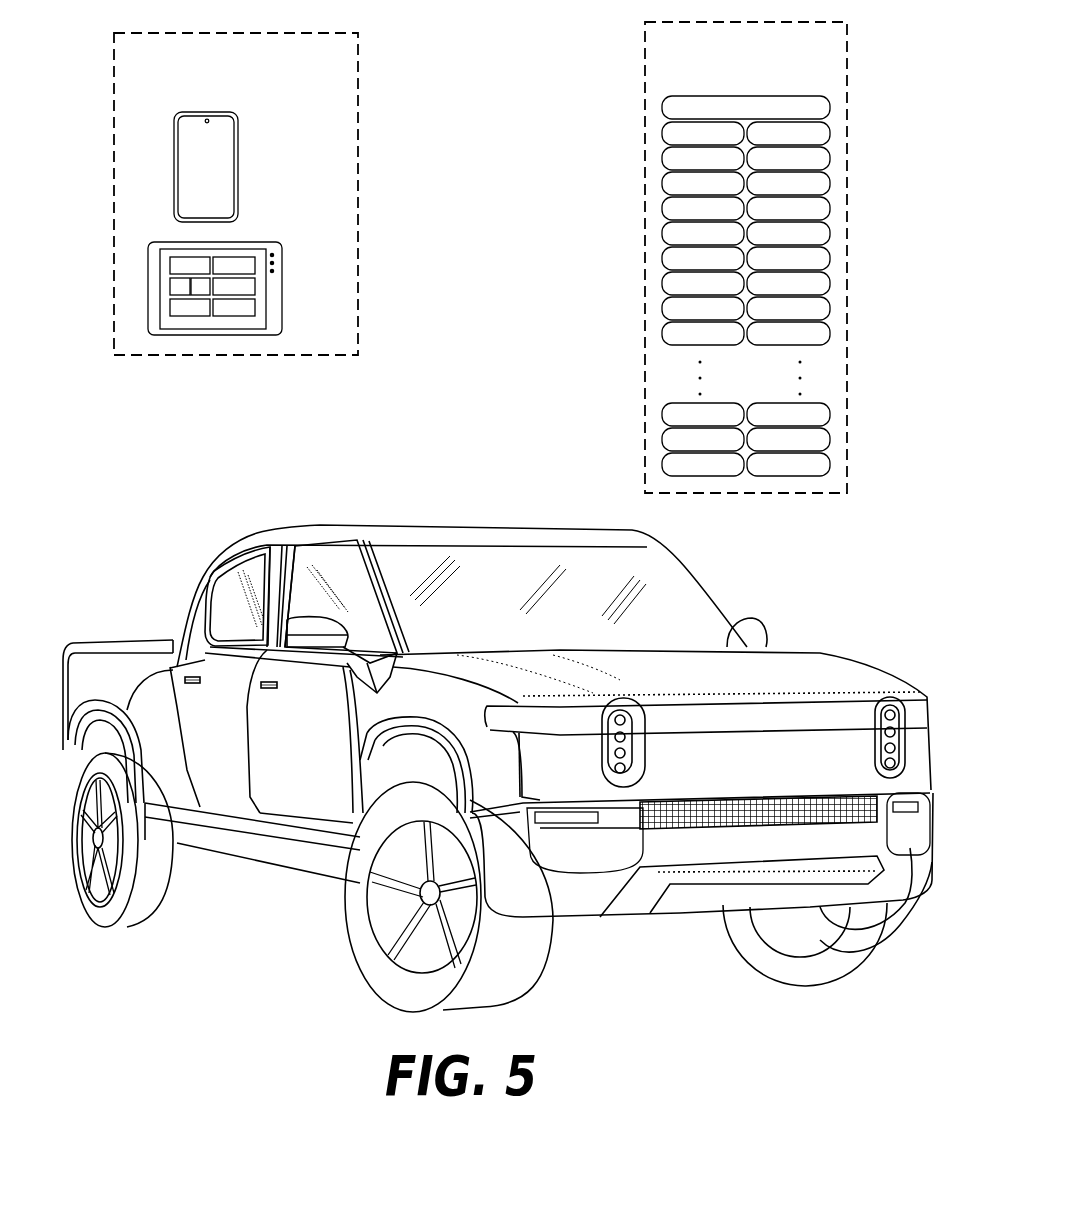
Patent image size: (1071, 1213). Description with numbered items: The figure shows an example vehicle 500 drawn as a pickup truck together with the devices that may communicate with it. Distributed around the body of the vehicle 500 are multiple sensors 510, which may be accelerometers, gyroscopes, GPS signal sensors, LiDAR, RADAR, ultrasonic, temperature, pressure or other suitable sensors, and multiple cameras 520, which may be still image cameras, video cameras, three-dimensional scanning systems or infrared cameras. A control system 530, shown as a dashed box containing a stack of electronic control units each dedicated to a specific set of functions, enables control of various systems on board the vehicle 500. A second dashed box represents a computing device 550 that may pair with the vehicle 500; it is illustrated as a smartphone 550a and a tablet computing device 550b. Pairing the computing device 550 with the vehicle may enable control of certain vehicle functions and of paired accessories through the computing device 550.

The vehicle 500 is at (192, 554).
The sensor 510 is at (67, 760).
The camera 520 is at (781, 777).
The control system 530 is at (695, 670).
The computing device 550 is at (250, 77).
The smartphone 550a is at (240, 165).
The tablet computing device 550b is at (284, 304).